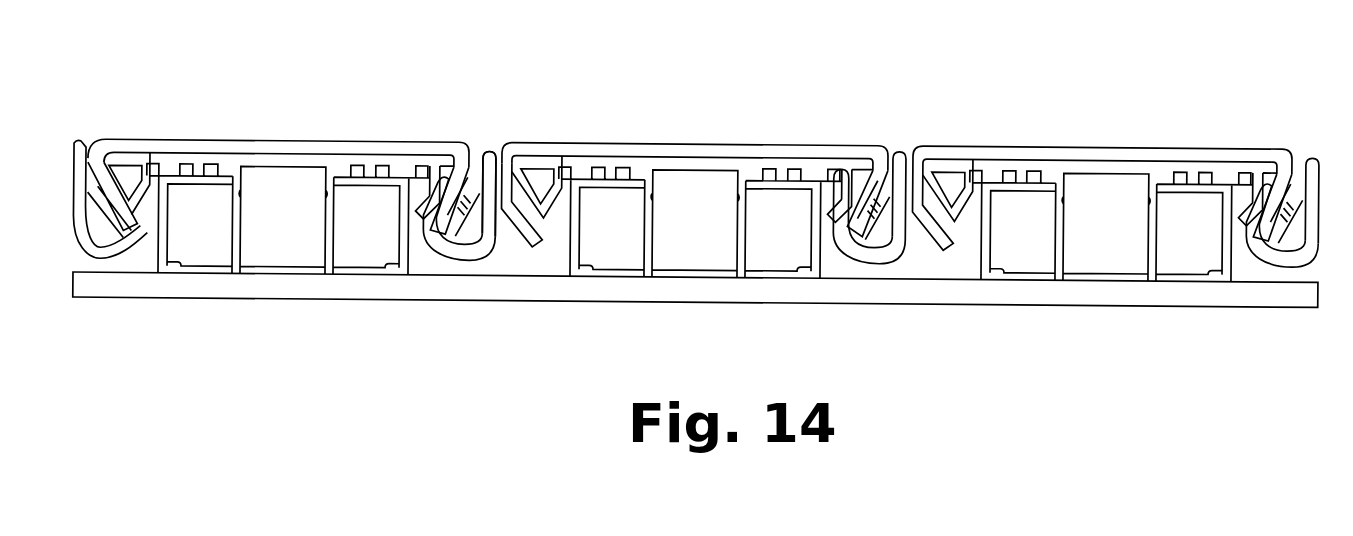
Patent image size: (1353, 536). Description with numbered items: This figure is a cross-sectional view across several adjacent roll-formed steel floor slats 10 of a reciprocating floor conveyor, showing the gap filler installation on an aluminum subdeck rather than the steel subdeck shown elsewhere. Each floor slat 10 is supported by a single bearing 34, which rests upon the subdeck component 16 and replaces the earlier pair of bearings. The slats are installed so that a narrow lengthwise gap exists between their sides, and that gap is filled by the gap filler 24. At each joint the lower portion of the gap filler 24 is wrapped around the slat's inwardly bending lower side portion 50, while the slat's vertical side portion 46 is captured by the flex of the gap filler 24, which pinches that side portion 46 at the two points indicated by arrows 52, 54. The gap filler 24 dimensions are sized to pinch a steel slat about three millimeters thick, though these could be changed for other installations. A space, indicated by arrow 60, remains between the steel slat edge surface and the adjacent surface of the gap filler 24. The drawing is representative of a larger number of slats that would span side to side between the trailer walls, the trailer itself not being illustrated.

The floor slat 10 is at (337, 140).
The subdeck component 16 is at (262, 277).
The gap filler 24 is at (110, 264).
The single bearing 34 is at (228, 166).
The vertical side portion 46 is at (872, 192).
The inwardly bending lower side portion 50 is at (819, 148).
The pinch point 52 is at (481, 148).
The pinch point 54 is at (513, 197).
The space 60 is at (481, 148).